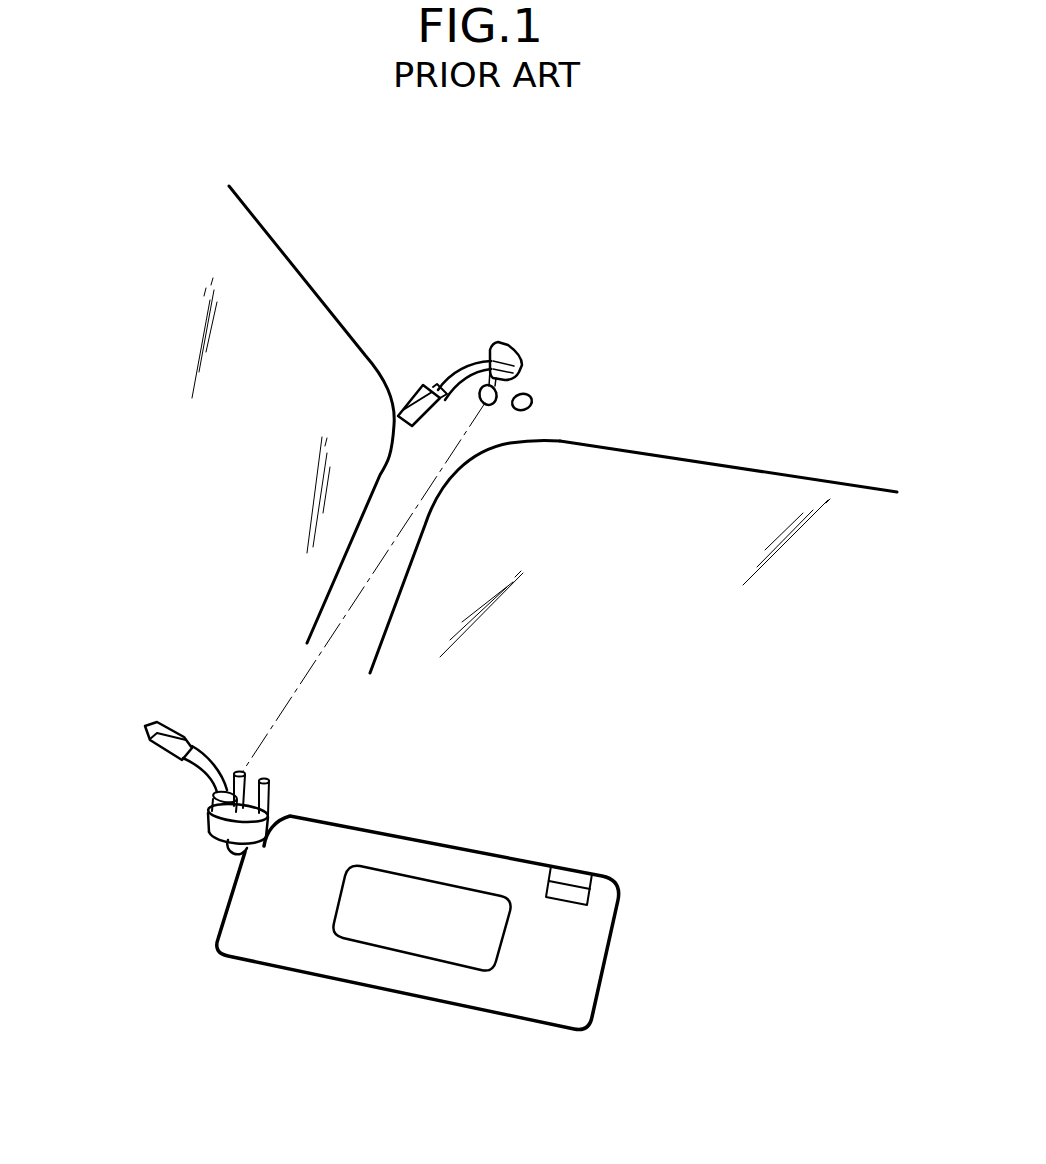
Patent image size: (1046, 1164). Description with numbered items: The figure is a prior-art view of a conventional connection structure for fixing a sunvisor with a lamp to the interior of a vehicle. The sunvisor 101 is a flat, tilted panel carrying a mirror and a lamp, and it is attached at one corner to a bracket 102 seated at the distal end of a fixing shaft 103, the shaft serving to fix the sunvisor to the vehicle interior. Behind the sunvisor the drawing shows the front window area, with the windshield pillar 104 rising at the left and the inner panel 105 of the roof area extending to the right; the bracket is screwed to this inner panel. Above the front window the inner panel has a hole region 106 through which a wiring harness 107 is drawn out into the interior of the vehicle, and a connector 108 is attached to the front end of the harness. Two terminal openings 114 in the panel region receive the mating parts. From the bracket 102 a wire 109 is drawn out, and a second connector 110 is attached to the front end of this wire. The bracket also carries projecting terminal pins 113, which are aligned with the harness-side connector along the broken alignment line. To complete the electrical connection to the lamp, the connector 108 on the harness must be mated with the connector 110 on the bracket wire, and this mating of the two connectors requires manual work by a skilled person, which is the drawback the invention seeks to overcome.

The sun visor 101 is at (532, 1010).
The connector body 102 is at (210, 817).
The pivot 103 is at (225, 845).
The pillar 104 is at (335, 268).
The roof 105 is at (787, 487).
The bracket 106 is at (502, 347).
The wire harness 107 is at (455, 360).
The connector plug 108 is at (423, 402).
The wire 109 is at (217, 762).
The connector plug 110 is at (167, 727).
The terminal pins 113 is at (243, 773).
The terminal holes 114 is at (495, 406).